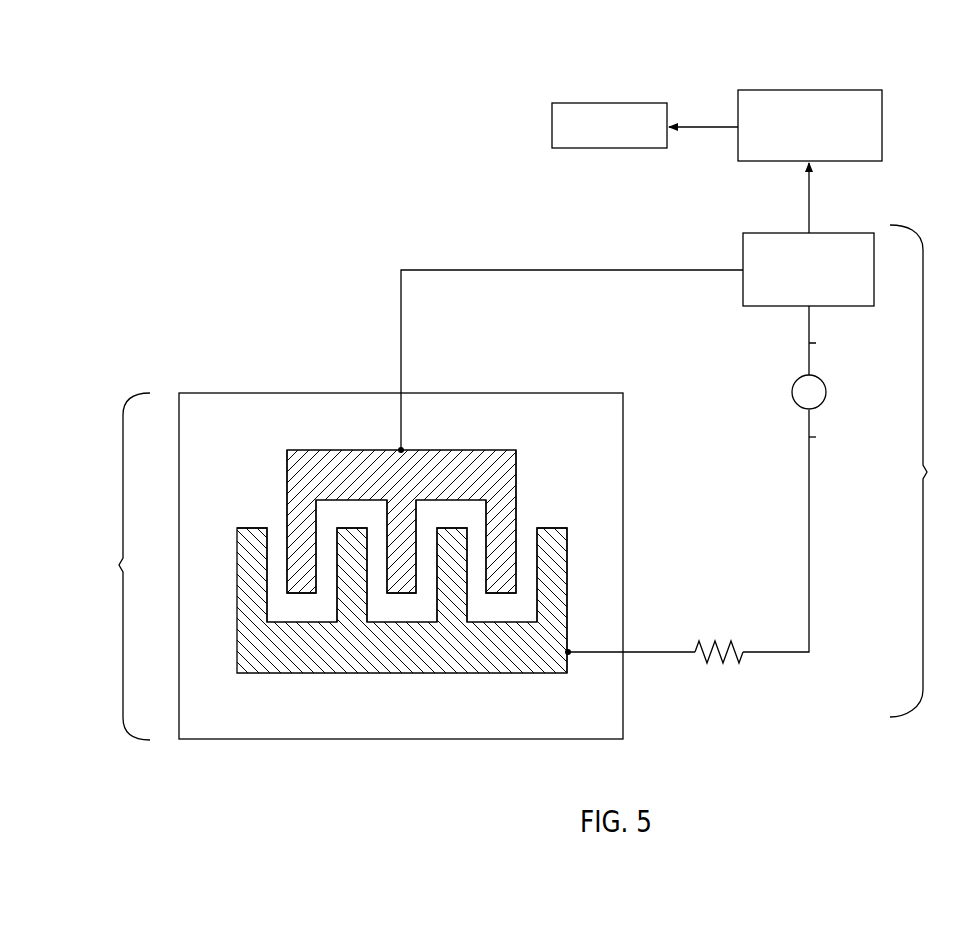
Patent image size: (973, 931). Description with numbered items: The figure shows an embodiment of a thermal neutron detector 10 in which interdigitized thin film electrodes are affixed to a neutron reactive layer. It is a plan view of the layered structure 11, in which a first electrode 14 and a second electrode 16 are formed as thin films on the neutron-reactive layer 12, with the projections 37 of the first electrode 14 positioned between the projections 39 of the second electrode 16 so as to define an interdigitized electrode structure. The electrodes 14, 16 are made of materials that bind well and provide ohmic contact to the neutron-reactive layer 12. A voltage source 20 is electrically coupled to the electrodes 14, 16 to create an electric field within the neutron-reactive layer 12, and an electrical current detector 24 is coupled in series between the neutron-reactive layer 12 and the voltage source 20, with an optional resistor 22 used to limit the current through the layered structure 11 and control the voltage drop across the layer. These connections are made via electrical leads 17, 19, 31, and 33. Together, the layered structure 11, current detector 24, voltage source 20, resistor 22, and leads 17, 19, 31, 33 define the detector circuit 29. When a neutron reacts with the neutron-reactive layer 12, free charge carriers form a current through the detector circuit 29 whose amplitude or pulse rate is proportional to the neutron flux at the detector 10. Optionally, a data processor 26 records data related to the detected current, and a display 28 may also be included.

The thermal neutron detector 10 is at (357, 165).
The layered structure 11 is at (119, 566).
The neutron-reactive layer 12 is at (249, 741).
The first electrode 14 is at (287, 466).
The second electrode 16 is at (237, 610).
The electrical lead 17 is at (527, 270).
The electrical lead 19 is at (665, 651).
The voltage source 20 is at (826, 392).
The resistor 22 is at (739, 660).
The current detector 24 is at (767, 233).
The data processor 26 is at (809, 90).
The display 28 is at (609, 103).
The detector circuit 29 is at (925, 471).
The electrical lead 31 is at (816, 343).
The electrical lead 33 is at (816, 437).
The projections 37 is at (302, 577).
The projections 39 is at (250, 555).